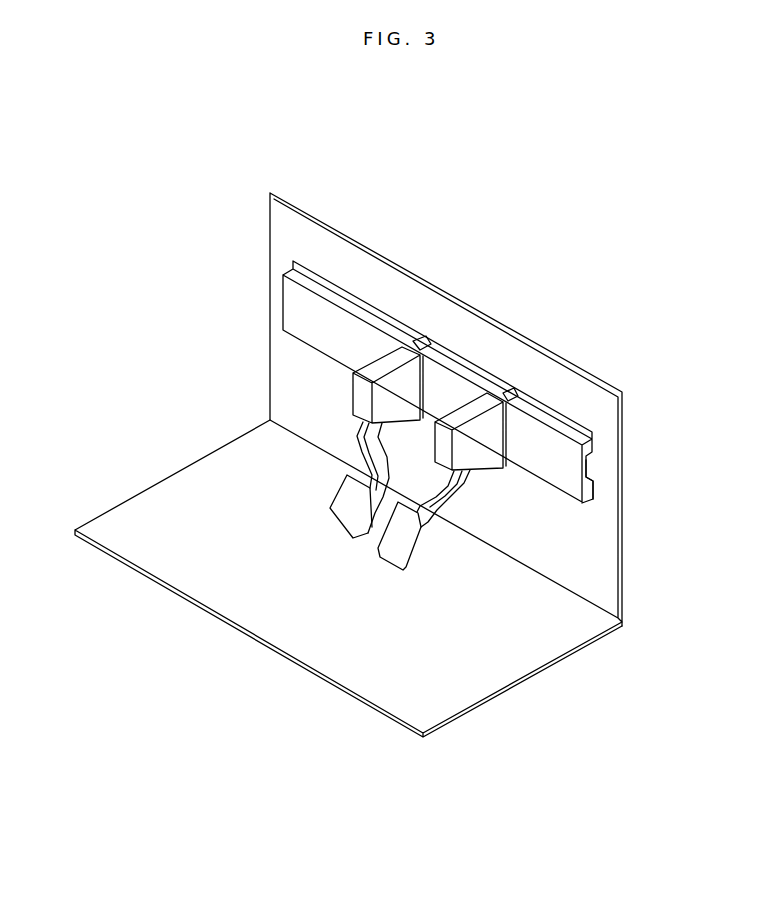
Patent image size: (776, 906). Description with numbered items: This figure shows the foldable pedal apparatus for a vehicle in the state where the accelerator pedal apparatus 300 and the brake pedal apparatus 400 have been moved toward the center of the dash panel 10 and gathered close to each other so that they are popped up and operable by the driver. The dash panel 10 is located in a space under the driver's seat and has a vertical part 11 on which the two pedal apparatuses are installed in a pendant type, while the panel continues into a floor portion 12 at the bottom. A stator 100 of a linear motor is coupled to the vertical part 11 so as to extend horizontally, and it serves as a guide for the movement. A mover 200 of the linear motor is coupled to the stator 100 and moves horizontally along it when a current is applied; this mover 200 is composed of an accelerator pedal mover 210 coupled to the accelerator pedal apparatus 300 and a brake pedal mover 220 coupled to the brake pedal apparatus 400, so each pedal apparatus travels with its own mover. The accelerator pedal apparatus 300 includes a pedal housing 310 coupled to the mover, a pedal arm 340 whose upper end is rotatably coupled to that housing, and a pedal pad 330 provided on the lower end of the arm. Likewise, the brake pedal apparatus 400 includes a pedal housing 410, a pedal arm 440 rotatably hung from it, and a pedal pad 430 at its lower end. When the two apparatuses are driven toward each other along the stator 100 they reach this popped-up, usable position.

The dash panel 10 is at (628, 443).
The vertical part 11 is at (345, 258).
The bottom plate 12 is at (210, 563).
The stator of the linear motor 100 is at (300, 313).
The mover of the linear motor 200 is at (524, 309).
The accelerator pedal mover 210 is at (507, 389).
The brake pedal mover 220 is at (421, 342).
The accelerator pedal apparatus 300 is at (495, 596).
The pedal housing 310 is at (597, 500).
The pedal pad 330 is at (397, 542).
The pedal arm 340 is at (465, 487).
The brake pedal apparatus 400 is at (236, 515).
The pedal housing 410 is at (362, 390).
The pedal pad 430 is at (328, 498).
The pedal arm 440 is at (373, 452).